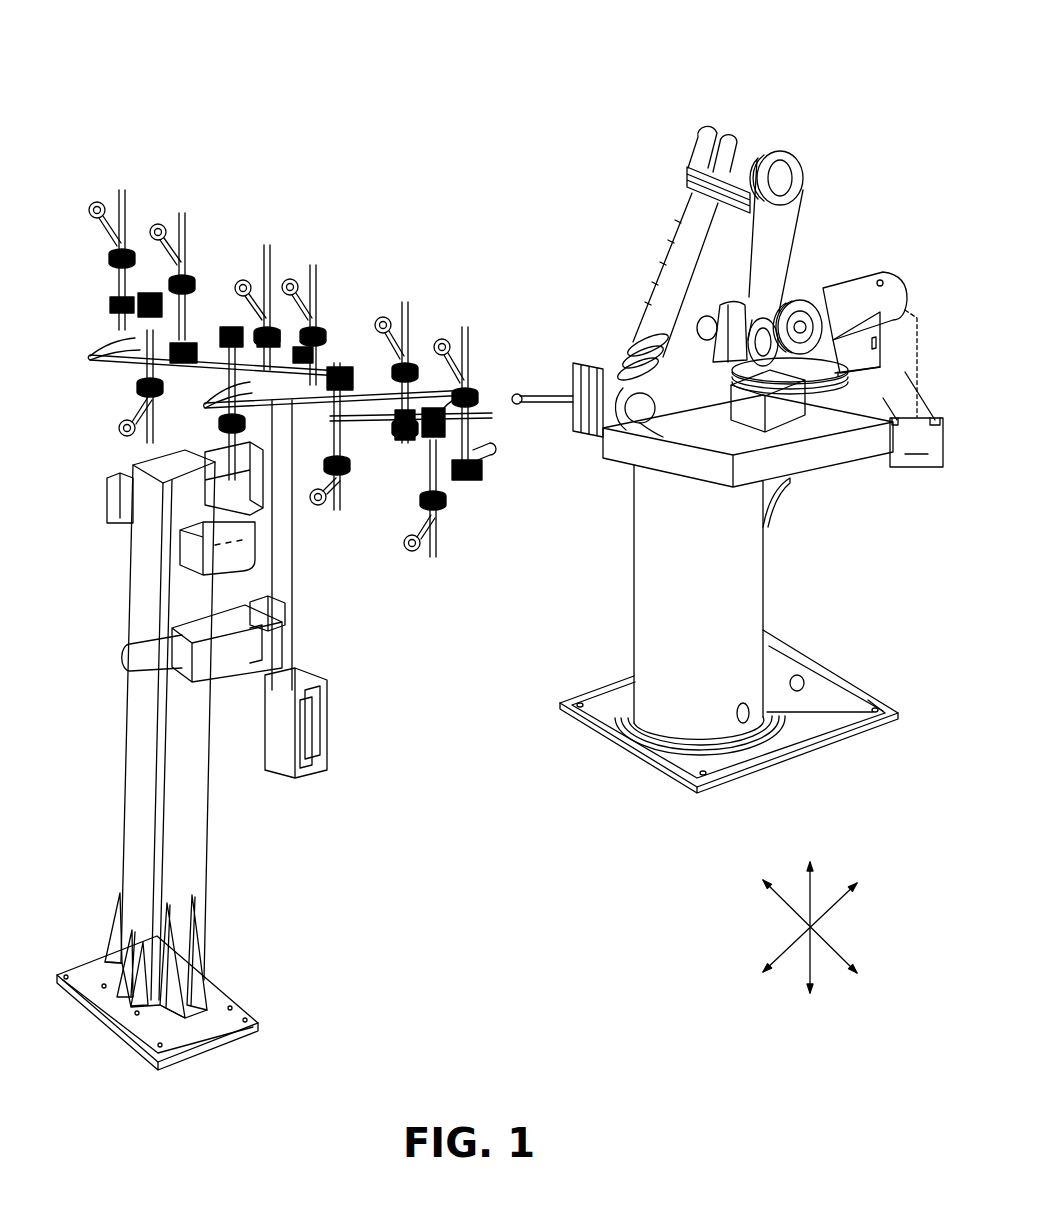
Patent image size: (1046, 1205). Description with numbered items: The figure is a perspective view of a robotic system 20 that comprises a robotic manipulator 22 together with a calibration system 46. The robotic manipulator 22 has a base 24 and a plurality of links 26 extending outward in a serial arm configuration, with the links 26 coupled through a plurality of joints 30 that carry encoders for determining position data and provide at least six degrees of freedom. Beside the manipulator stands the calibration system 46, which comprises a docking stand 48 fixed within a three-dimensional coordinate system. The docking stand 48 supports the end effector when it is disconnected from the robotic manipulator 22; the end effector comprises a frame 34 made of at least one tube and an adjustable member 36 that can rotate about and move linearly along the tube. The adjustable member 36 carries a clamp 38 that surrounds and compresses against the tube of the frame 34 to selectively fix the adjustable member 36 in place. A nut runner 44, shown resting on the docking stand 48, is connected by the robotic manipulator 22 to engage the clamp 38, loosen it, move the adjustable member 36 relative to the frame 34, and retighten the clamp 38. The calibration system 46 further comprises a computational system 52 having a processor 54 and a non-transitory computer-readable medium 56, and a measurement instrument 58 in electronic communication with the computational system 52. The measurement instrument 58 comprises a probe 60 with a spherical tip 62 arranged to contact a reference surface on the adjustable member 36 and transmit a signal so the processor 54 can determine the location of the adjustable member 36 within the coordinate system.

The robotic system 20 is at (696, 34).
The robotic manipulator 22 is at (877, 274).
The base 24 is at (765, 570).
The links 26 is at (738, 160).
The joints 30 is at (780, 180).
The frame 34 is at (352, 429).
The adjustable member 36 is at (122, 198).
The clamp 38 is at (100, 355).
The nut runner 44 is at (290, 658).
The calibration system 46 is at (406, 156).
The docking stand 48 is at (130, 820).
The computational system 52 is at (916, 442).
The processor 54 is at (897, 420).
The non-transitory computer-readable medium 56 is at (935, 420).
The measurement instrument 58 is at (576, 433).
The probe 60 is at (520, 396).
The tip 62 is at (519, 404).